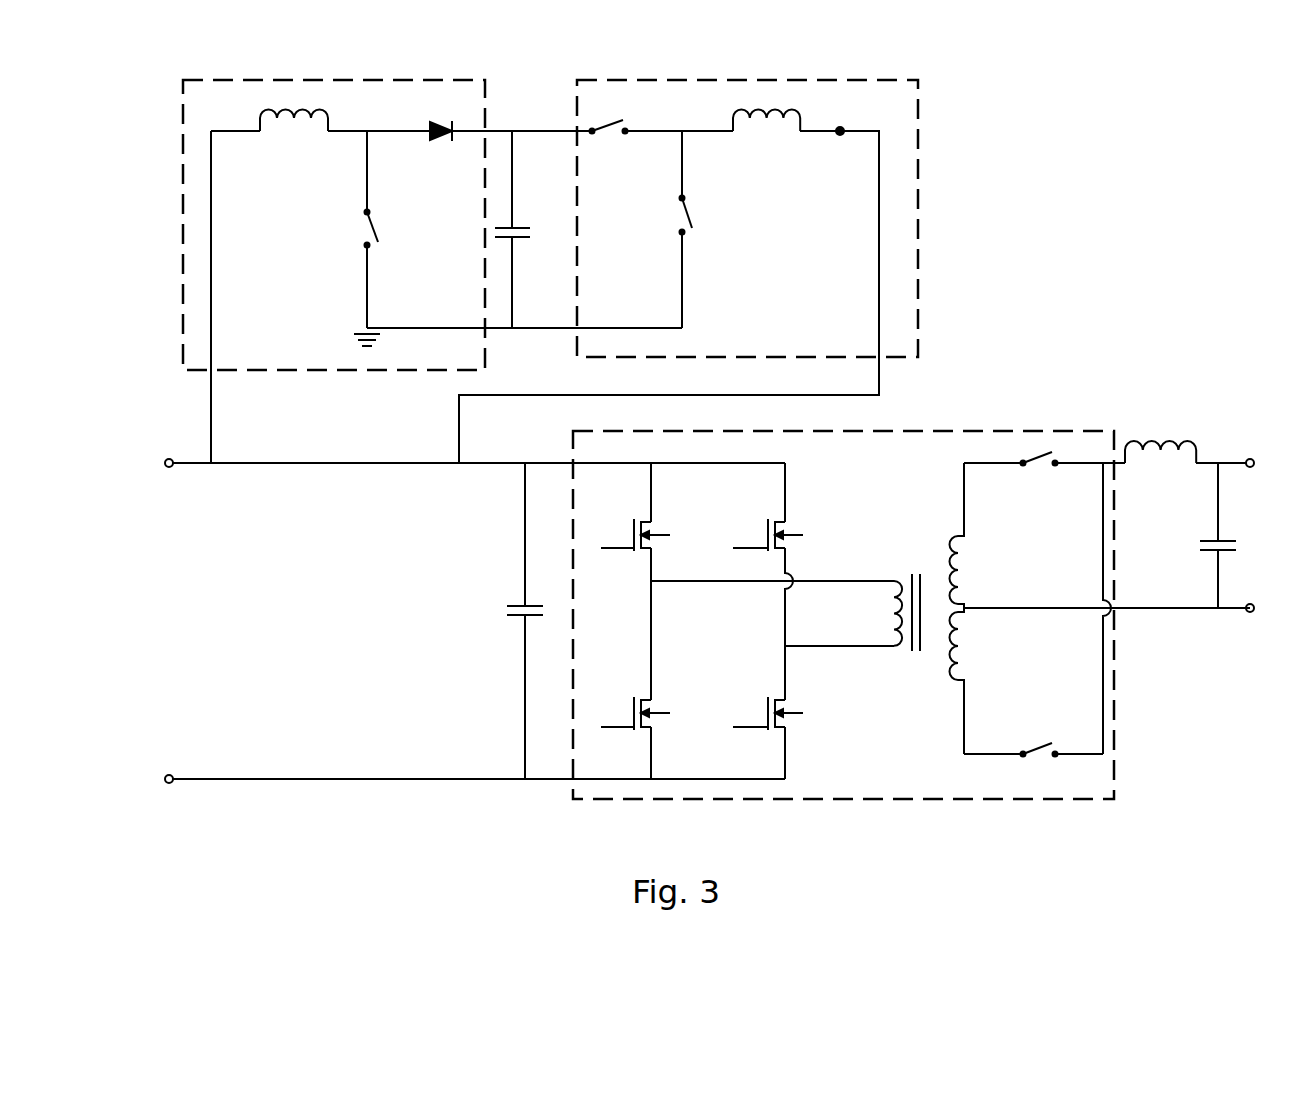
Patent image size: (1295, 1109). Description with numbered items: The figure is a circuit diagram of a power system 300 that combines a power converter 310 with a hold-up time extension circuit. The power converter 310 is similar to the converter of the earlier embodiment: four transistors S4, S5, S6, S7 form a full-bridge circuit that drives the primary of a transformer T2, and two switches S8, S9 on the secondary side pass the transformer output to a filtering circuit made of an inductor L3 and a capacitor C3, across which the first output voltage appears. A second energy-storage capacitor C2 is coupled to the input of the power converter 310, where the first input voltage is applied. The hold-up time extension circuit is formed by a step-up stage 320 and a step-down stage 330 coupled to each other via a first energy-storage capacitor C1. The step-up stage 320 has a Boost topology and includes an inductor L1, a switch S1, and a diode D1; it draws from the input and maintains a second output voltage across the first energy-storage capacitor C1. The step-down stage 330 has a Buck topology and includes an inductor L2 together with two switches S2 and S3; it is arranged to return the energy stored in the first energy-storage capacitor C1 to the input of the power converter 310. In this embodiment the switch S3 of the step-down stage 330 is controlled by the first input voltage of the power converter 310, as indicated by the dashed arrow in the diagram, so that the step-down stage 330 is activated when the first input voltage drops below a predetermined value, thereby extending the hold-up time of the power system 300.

The power system 300 is at (1127, 195).
The power converter 310 is at (933, 431).
The step-up stage 320 is at (445, 80).
The step-down stage 330 is at (853, 80).
The inductor L1 is at (294, 138).
The diode D1 is at (439, 152).
The switch S1 is at (352, 229).
The first energy-storage capacitor C1 is at (525, 229).
The switch S2 is at (609, 145).
The switch S3 is at (840, 131).
The inductor L2 is at (766, 140).
The second energy-storage capacitor C2 is at (505, 621).
The transistor S4 is at (633, 533).
The transistor S5 is at (765, 533).
The transistor S6 is at (629, 713).
The transistor S7 is at (765, 713).
The transformer T2 is at (929, 608).
The switch S8 is at (1044, 477).
The switch S9 is at (1033, 769).
The inductor L3 is at (1160, 469).
The capacitor C3 is at (1199, 535).